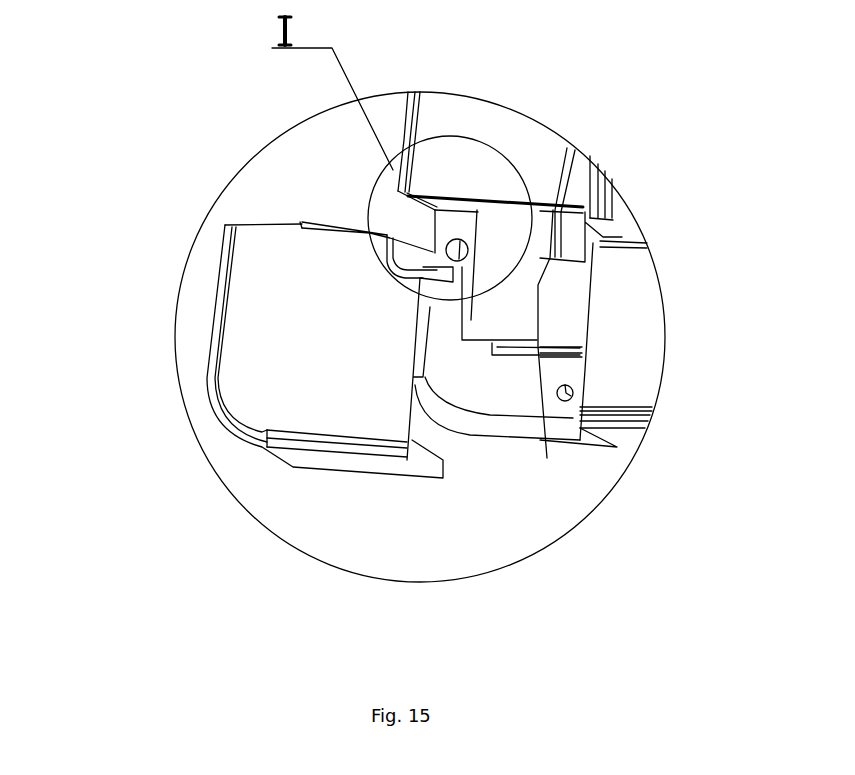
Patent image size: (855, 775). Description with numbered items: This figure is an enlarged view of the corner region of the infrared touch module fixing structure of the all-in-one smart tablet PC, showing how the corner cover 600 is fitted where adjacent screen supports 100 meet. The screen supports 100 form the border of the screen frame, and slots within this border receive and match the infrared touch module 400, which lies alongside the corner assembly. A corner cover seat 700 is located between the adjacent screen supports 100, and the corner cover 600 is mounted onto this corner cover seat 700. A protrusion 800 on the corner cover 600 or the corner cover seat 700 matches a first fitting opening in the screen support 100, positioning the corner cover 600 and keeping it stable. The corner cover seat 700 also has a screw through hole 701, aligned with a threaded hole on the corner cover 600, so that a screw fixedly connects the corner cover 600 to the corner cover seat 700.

The screen support 100 is at (529, 150).
The protrusion 800 is at (320, 225).
The corner cover 600 is at (303, 358).
The infrared touch module 400 is at (523, 300).
The corner cover seat 700 is at (472, 378).
The screw through hole 701 is at (572, 389).